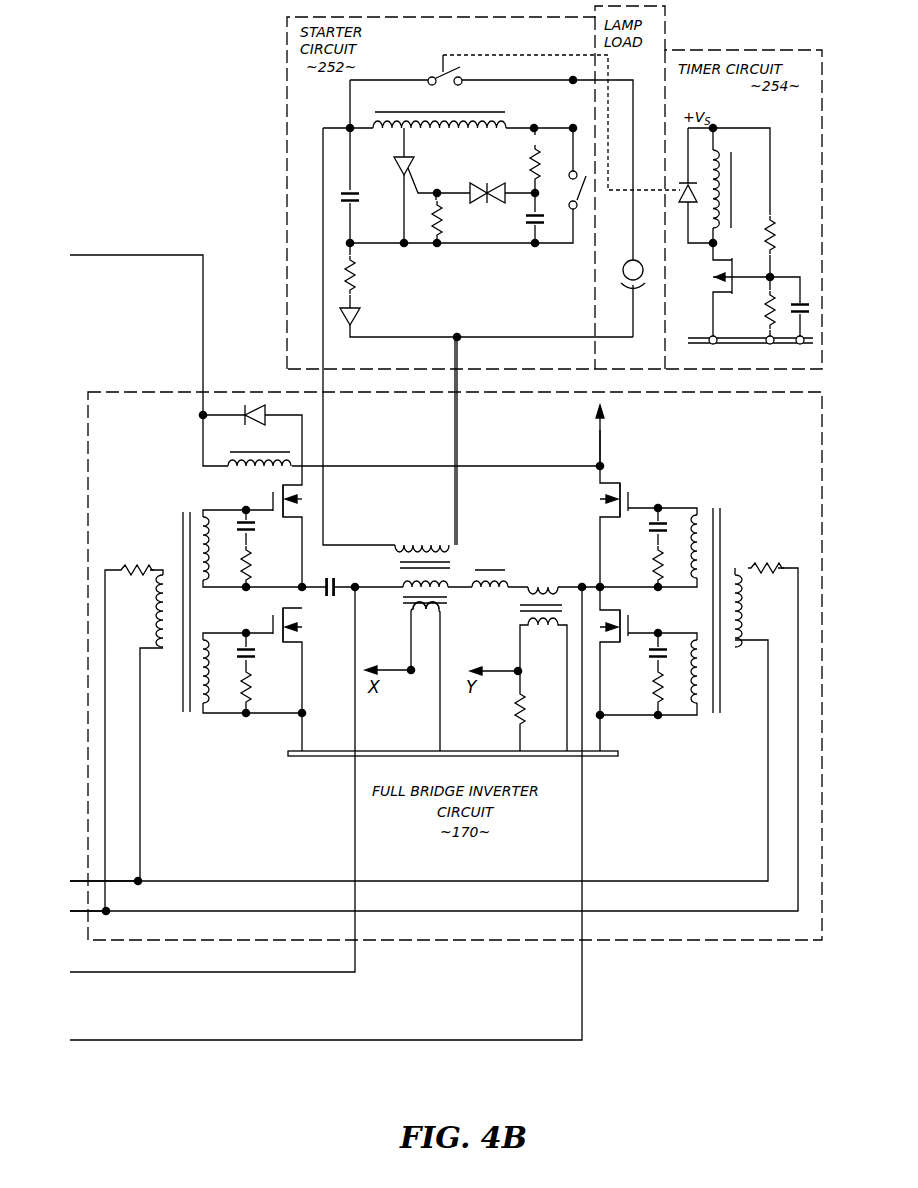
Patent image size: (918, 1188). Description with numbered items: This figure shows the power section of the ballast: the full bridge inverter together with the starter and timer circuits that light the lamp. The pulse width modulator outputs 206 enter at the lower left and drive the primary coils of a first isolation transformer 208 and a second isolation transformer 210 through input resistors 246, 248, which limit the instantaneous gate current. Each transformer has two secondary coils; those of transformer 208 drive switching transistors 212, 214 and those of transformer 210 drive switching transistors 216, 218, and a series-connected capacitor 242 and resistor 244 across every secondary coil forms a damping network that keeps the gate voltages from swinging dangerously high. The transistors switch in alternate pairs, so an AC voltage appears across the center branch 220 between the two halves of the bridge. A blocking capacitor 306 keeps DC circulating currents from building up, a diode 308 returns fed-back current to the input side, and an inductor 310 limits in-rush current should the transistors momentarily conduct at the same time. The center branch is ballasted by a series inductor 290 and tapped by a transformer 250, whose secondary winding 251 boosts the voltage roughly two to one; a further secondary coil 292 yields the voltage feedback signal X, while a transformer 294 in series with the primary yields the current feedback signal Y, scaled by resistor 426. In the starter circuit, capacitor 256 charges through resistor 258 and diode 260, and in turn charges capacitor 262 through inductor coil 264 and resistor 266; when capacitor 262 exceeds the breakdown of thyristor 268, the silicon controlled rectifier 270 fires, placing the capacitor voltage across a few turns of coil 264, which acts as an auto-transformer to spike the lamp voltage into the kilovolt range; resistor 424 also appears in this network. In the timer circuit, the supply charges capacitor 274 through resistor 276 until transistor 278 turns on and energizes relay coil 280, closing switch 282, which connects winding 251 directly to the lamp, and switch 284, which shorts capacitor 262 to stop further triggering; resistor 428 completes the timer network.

The pulse width modulator outputs 206 is at (262, 882).
The first isolation transformer 208 is at (185, 720).
The second isolation transformer 210 is at (713, 720).
The switching transistor 212 is at (280, 491).
The switching transistor 214 is at (284, 609).
The switching transistor 216 is at (610, 483).
The switching transistor 218 is at (613, 609).
The center branch 220 is at (529, 464).
The capacitor 242 is at (641, 661).
The resistor 244 is at (641, 695).
The input resistor 246 is at (140, 570).
The input resistor 248 is at (763, 565).
The transformer 250 is at (470, 548).
The secondary winding 251 is at (430, 542).
The capacitor 256 is at (352, 203).
The resistor 258 is at (360, 274).
The diode 260 is at (360, 314).
The second capacitor 262 is at (528, 226).
The inductor coil 264 is at (430, 133).
The resistor 266 is at (540, 150).
The thyristor 268 is at (488, 185).
The silicon controlled rectifier 270 is at (395, 168).
The capacitor 274 is at (802, 300).
The resistor 276 is at (772, 230).
The transistor 278 is at (720, 273).
The relay coil 280 is at (722, 158).
The switch 282 is at (442, 82).
The switch 284 is at (580, 210).
The inductor 290 is at (508, 575).
The second secondary coil 292 is at (400, 600).
The transformer 294 is at (520, 606).
The blocking capacitor 306 is at (335, 582).
The diode 308 is at (265, 412).
The inductor 310 is at (225, 468).
The resistor 424 is at (440, 225).
The resistor 426 is at (515, 708).
The resistor 428 is at (764, 310).